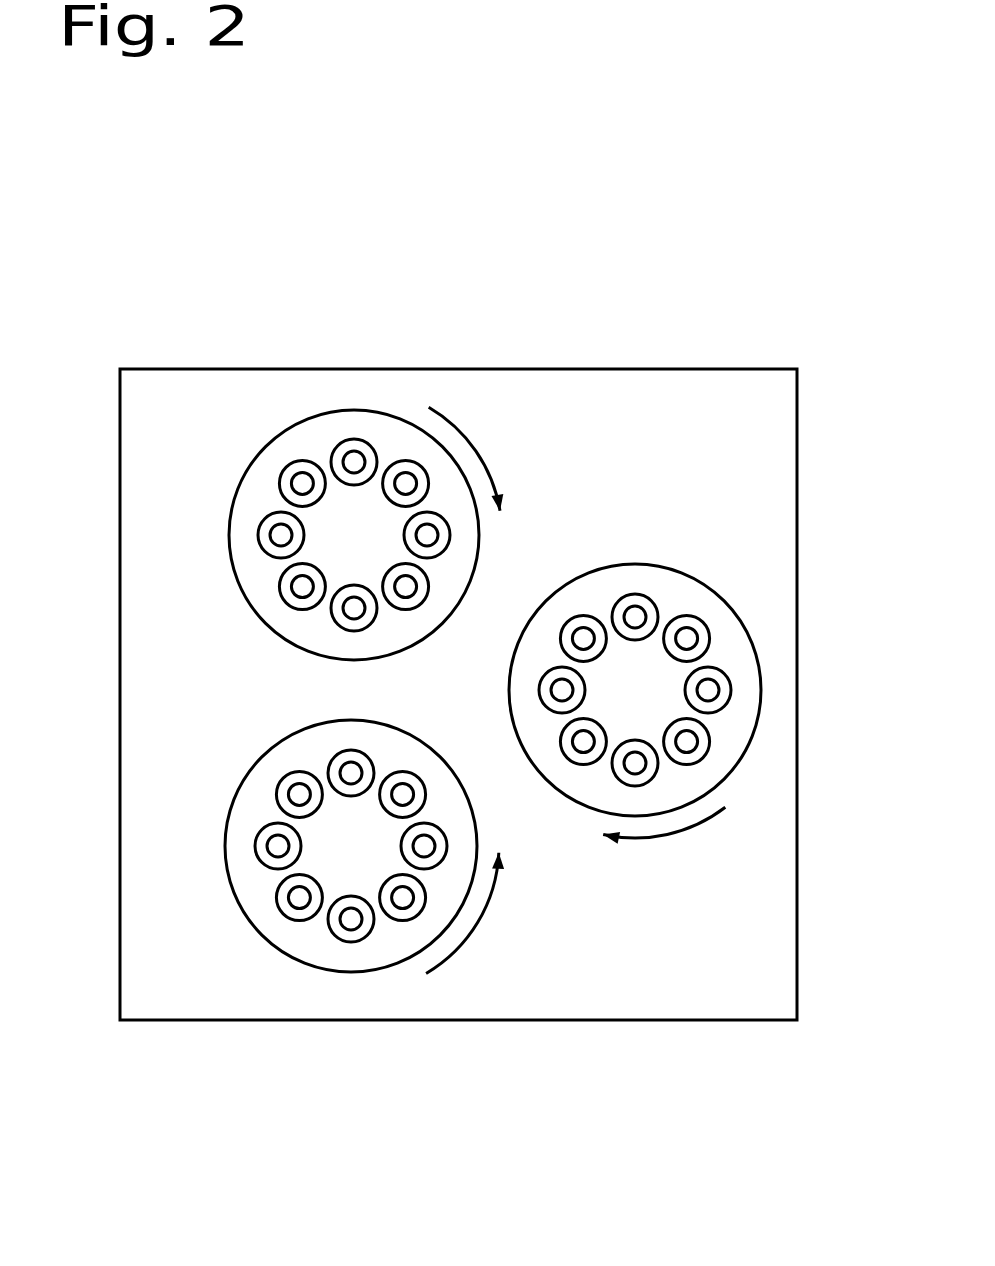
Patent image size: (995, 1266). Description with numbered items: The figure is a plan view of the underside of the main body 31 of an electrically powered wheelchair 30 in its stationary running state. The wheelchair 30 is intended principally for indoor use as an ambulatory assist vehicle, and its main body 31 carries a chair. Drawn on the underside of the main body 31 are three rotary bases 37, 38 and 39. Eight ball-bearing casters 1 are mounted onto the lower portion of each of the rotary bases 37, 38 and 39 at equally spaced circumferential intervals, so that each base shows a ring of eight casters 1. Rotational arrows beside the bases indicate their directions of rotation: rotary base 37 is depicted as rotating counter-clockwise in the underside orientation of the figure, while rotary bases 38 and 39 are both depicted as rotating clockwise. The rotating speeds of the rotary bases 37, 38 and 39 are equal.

The electrically powered wheelchair 30 is at (572, 314).
The main body 31 is at (738, 462).
The rotary base 37 is at (365, 955).
The rotary base 38 is at (350, 420).
The rotary base 39 is at (732, 627).
The ball-bearing caster 1 is at (290, 478).